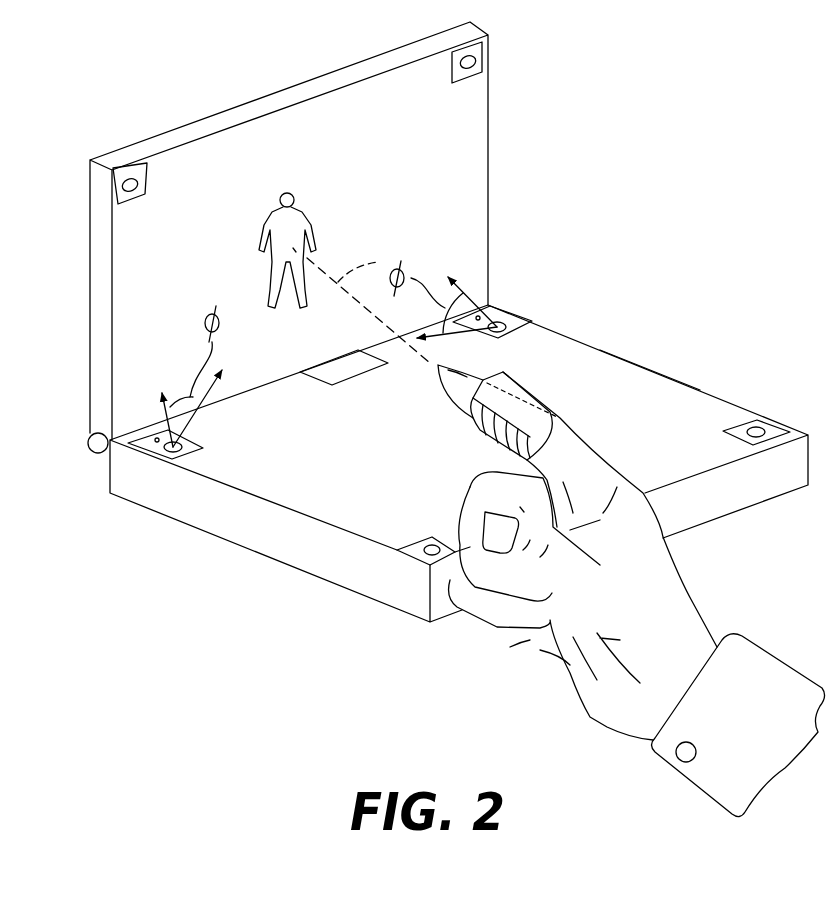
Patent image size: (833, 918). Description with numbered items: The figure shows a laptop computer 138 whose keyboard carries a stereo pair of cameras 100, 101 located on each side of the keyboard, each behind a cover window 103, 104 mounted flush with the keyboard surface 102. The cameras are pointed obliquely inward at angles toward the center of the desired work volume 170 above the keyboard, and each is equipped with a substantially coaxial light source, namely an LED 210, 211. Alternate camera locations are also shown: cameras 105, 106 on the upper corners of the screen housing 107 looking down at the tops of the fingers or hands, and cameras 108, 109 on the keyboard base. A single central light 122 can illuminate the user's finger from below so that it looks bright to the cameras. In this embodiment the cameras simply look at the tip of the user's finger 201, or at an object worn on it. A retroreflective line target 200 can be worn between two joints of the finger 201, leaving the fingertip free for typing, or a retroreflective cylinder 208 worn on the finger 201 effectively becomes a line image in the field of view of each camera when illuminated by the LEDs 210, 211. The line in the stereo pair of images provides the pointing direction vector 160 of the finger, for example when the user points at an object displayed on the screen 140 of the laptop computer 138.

The camera 100 is at (425, 322).
The camera 101 is at (530, 312).
The keyboard surface 102 is at (390, 525).
The cover window 103 is at (193, 457).
The cover window 104 is at (535, 322).
The camera 105 is at (128, 178).
The camera 106 is at (478, 60).
The screen housing 107 is at (474, 160).
The camera 108 is at (400, 552).
The camera 109 is at (757, 430).
The central light 122 is at (323, 387).
The laptop computer 138 is at (677, 378).
The screen 140 is at (288, 188).
The pointing direction vector 160 is at (380, 255).
The work volume 170 is at (633, 235).
The line target 200 is at (557, 417).
The finger 201 is at (487, 373).
The retroreflective cylinder 208 is at (480, 443).
The LED 210 is at (157, 440).
The LED 211 is at (495, 295).